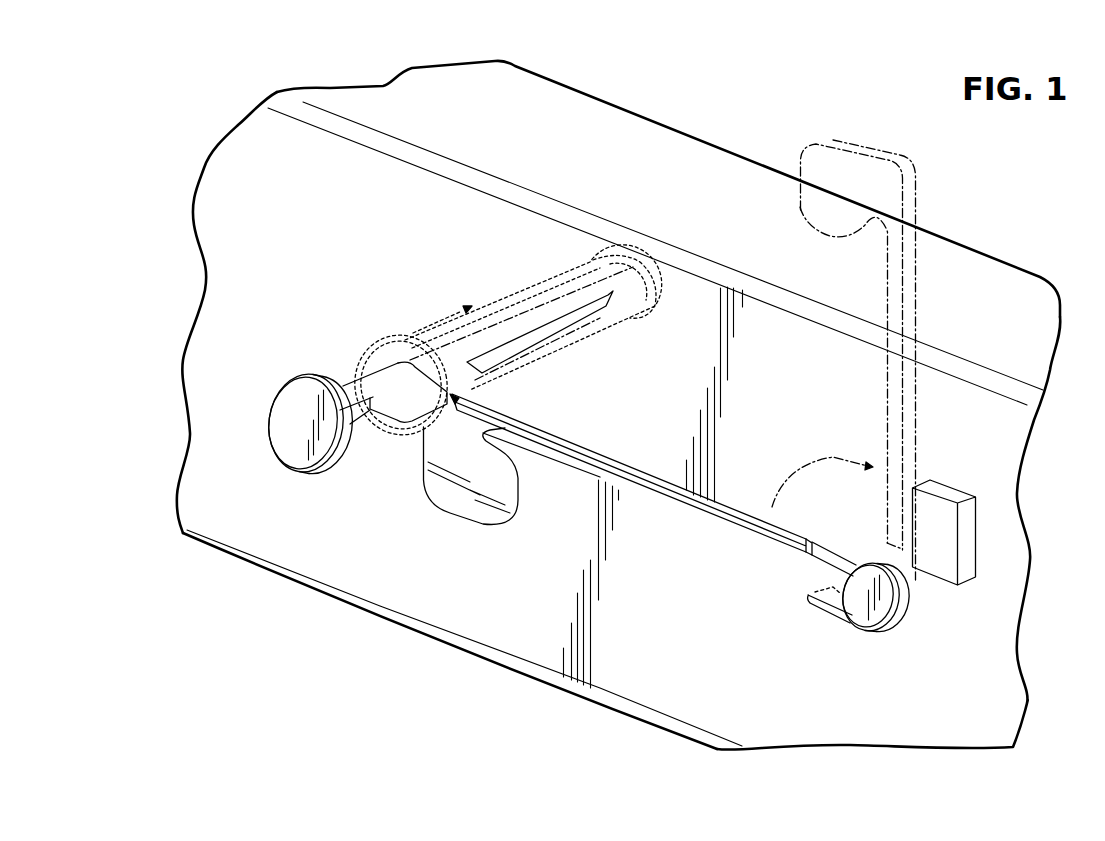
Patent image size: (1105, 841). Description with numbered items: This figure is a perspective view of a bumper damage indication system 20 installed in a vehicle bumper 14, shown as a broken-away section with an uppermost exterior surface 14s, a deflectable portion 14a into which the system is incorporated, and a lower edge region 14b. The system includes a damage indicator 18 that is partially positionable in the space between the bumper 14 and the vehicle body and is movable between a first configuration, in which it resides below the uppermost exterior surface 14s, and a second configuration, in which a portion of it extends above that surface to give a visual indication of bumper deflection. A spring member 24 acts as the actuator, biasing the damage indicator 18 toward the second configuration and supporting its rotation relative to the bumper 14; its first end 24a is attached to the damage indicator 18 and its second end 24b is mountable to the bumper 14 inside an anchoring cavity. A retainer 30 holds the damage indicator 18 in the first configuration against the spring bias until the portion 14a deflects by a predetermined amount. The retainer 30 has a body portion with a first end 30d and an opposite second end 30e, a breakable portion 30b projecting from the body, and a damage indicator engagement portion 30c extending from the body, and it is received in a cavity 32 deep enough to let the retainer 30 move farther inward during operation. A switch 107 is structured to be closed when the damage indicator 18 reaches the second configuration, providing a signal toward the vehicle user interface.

The rear bumper 14 is at (601, 397).
The portion of the bumper 14a is at (257, 150).
The uppermost exterior surface of the bumper 14s is at (457, 98).
The bottom edge of panel 14b is at (757, 648).
The damage indicator 18 is at (607, 478).
The bumper damage indication system 20 is at (1052, 230).
The spring member 24 is at (679, 533).
The first end of the spring member 24a is at (817, 540).
The second end of the spring member 24b is at (810, 603).
The retainer 30 is at (404, 376).
The breakable portion 30b is at (373, 363).
The damage indicator engagement portion 30c is at (562, 328).
The first end of the body portion 30d is at (293, 432).
The second end of the body portion 30e is at (500, 312).
The cavity 32 is at (627, 253).
The switch 107 is at (950, 493).